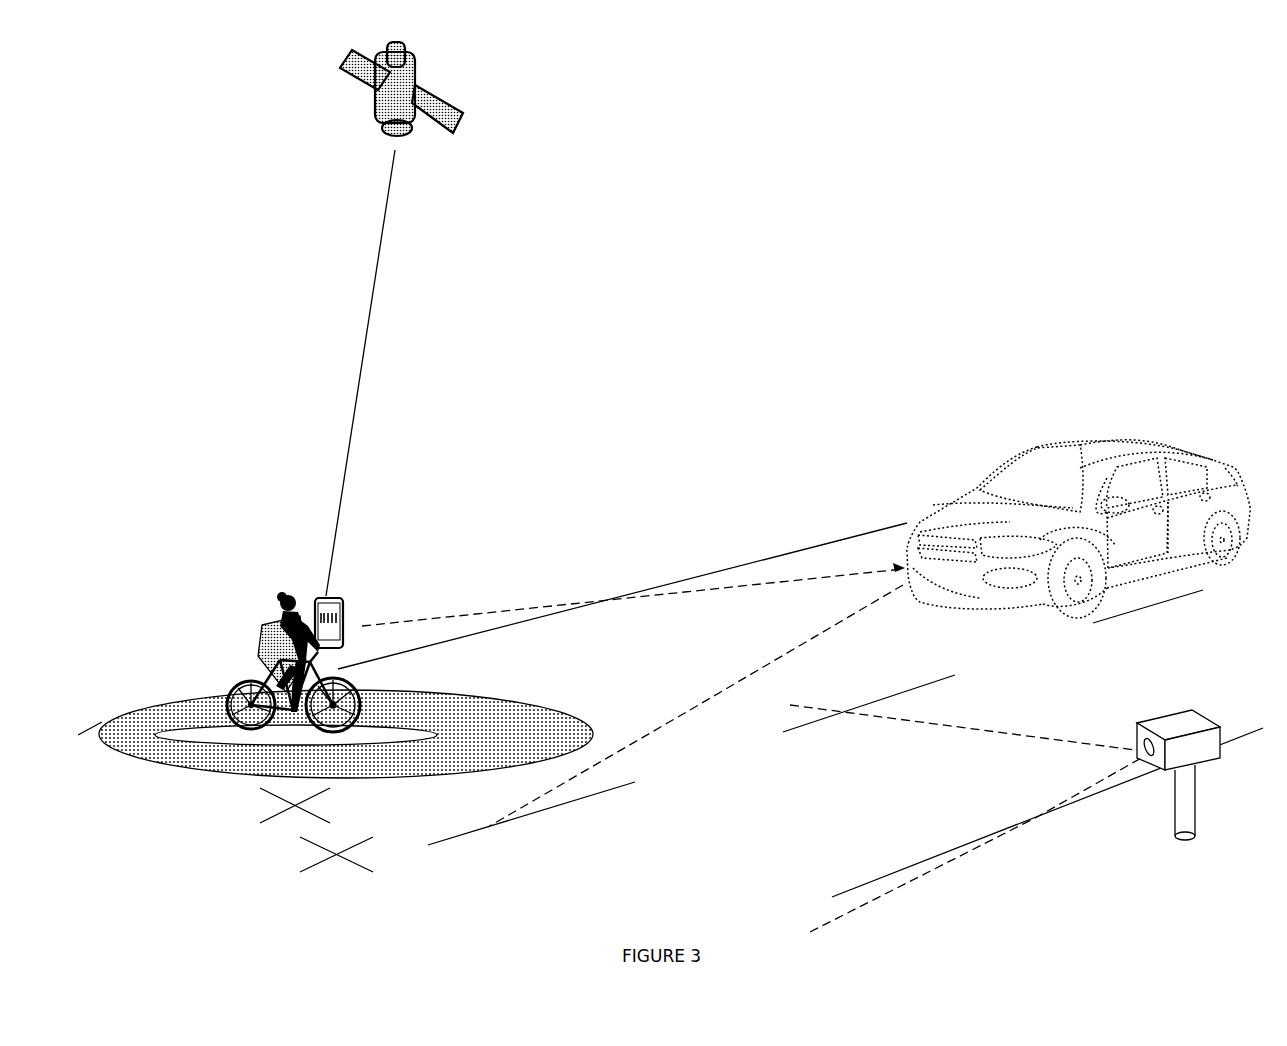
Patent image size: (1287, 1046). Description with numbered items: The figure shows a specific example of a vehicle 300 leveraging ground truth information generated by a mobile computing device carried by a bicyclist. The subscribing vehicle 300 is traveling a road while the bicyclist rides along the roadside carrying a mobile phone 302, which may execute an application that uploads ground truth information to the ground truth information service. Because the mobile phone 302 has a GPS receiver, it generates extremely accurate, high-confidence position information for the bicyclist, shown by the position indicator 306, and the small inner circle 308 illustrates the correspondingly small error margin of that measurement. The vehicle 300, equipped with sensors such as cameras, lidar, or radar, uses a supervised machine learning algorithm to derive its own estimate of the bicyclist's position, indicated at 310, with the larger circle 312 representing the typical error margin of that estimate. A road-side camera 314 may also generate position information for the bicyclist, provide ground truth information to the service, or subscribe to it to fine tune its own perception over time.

The vehicle 300 is at (1078, 517).
The mobile phone 302 is at (345, 620).
The position indicator 306 is at (297, 779).
The inner circle 308 is at (296, 737).
The position indicated by the vehicle 310 is at (337, 783).
The larger circle 312 is at (346, 734).
The road-side camera 314 is at (1178, 775).